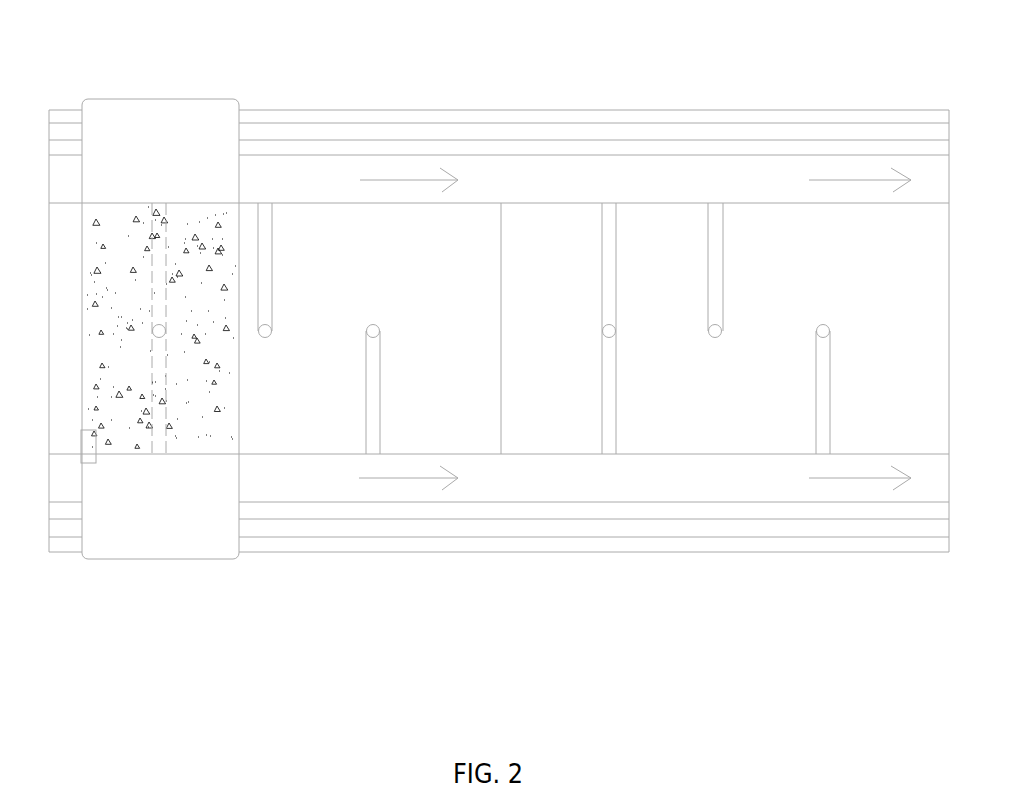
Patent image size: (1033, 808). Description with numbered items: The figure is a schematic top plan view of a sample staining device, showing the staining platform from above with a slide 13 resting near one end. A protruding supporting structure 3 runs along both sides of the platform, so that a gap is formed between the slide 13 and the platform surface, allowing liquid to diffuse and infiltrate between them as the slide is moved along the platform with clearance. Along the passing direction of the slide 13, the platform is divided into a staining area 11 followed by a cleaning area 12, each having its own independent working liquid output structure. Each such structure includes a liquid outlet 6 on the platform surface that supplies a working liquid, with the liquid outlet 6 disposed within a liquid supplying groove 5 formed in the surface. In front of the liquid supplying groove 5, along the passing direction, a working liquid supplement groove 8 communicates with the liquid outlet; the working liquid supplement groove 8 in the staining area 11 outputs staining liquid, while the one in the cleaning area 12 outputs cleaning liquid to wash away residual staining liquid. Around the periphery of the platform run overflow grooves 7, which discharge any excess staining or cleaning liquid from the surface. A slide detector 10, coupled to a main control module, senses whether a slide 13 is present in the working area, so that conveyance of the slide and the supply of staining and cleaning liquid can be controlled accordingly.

The supporting structure 3 is at (747, 137).
The liquid supplying groove 5 is at (158, 267).
The liquid outlet 6 is at (267, 313).
The overflow groove 7 is at (602, 183).
The working liquid supplement groove 8 is at (268, 233).
The slide detector 10 is at (91, 466).
The staining area 11 is at (418, 287).
The cleaning area 12 is at (713, 400).
The slide 13 is at (157, 135).